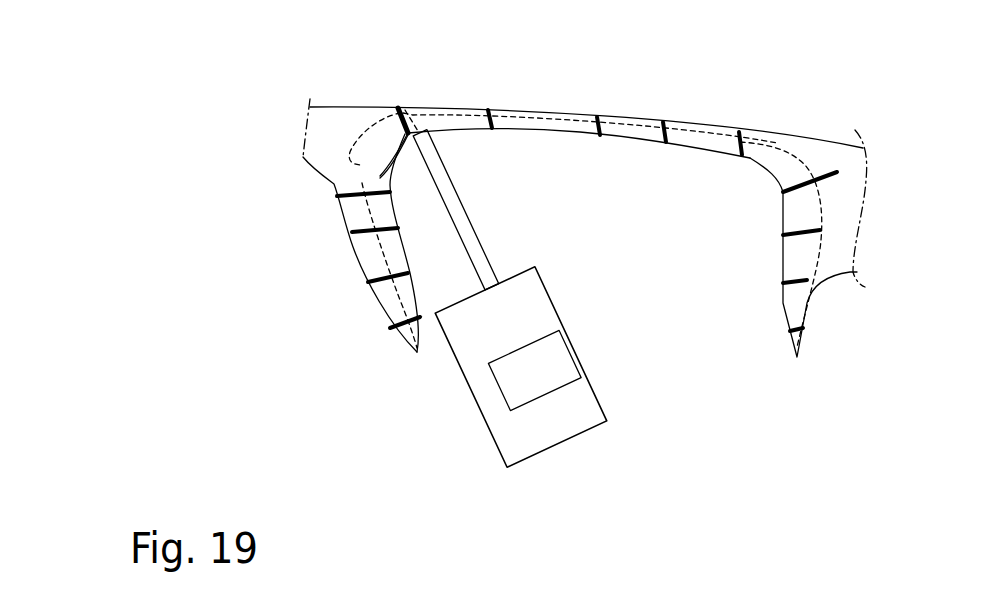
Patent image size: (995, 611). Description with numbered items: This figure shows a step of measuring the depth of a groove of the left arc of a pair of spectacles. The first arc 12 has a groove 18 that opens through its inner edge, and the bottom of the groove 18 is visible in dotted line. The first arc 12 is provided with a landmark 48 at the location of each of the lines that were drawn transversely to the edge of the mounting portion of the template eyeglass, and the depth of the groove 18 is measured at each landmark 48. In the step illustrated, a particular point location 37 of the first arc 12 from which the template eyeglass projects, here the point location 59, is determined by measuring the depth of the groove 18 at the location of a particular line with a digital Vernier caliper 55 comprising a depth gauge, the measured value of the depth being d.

The first arc 12 is at (348, 107).
The groove 18 is at (553, 143).
The landmark 48 is at (668, 133).
The point location 37 is at (380, 176).
The particular point location 59 is at (380, 178).
The digital Vernier caliper 55 is at (557, 307).